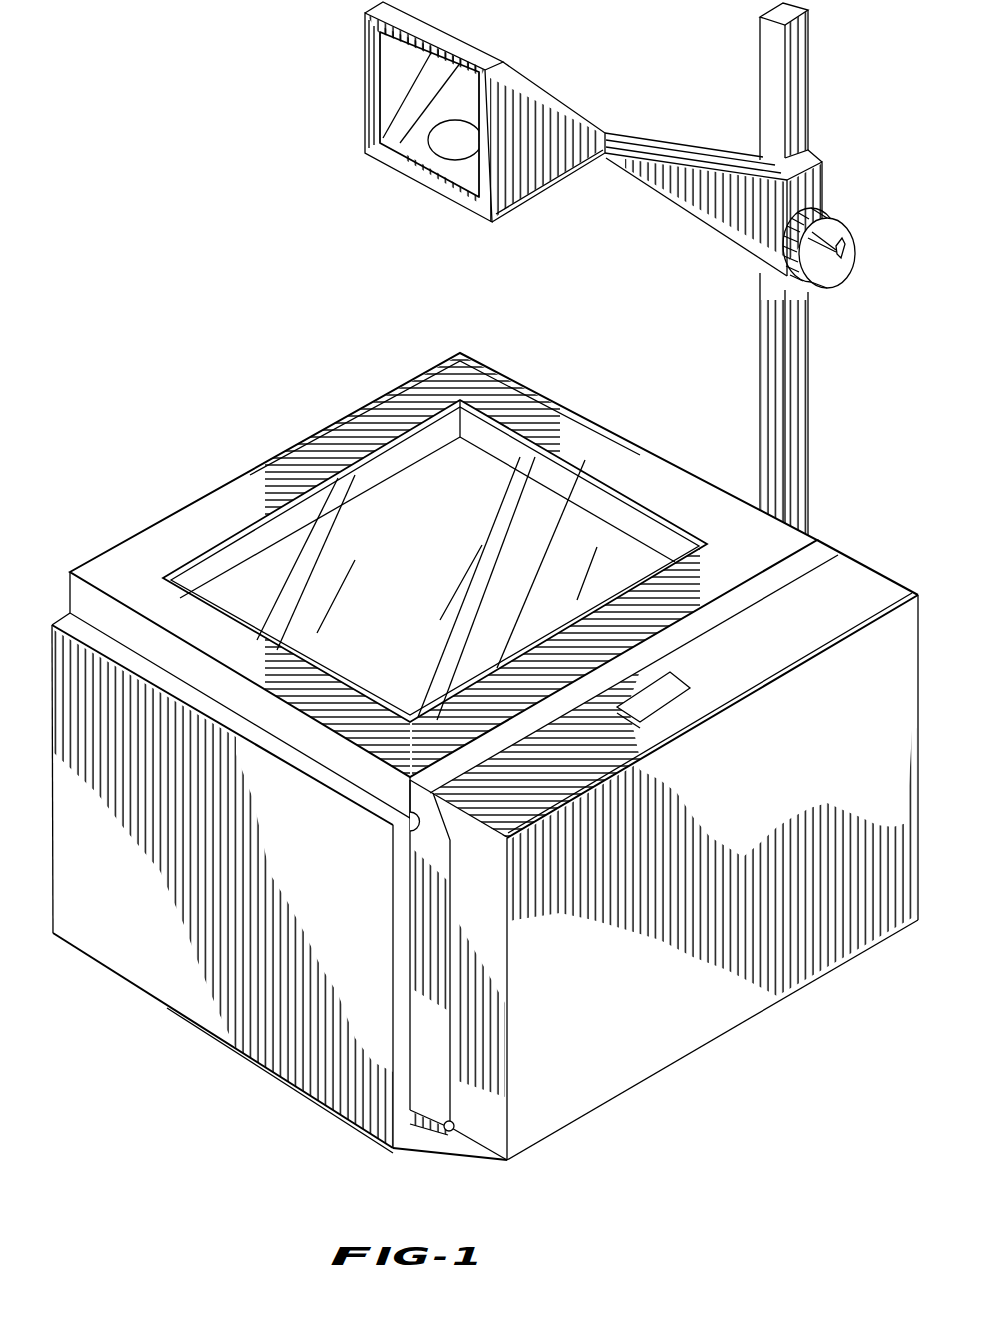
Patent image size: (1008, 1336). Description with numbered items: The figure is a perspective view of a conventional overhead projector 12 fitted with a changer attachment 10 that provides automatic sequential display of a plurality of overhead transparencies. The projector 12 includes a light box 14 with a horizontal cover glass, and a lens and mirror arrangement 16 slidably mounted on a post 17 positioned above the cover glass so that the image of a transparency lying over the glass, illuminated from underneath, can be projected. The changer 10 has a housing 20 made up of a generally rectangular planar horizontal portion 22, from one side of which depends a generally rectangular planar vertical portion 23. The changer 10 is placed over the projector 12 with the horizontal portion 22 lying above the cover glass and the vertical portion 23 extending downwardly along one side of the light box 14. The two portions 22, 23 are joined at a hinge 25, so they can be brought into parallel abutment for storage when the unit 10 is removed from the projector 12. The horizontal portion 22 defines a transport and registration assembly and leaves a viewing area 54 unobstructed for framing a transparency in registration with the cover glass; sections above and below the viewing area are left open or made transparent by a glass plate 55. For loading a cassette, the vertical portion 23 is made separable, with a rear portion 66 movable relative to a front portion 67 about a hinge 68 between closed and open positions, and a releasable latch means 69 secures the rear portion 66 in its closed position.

The changer attachment 10 is at (192, 352).
The overhead projector 12 is at (485, 775).
The light box 14 is at (135, 957).
The lens and mirror arrangement 16 is at (365, 117).
The post 17 is at (800, 100).
The housing 20 is at (892, 548).
The horizontal portion 22 is at (437, 610).
The vertical portion 23 is at (822, 946).
The hinge 25 is at (398, 826).
The viewing area 54 is at (449, 566).
The glass plate 55 is at (577, 483).
The rear portion 66 is at (487, 1128).
The front portion 67 is at (425, 930).
The hinge 68 is at (448, 1132).
The latch means 69 is at (690, 683).